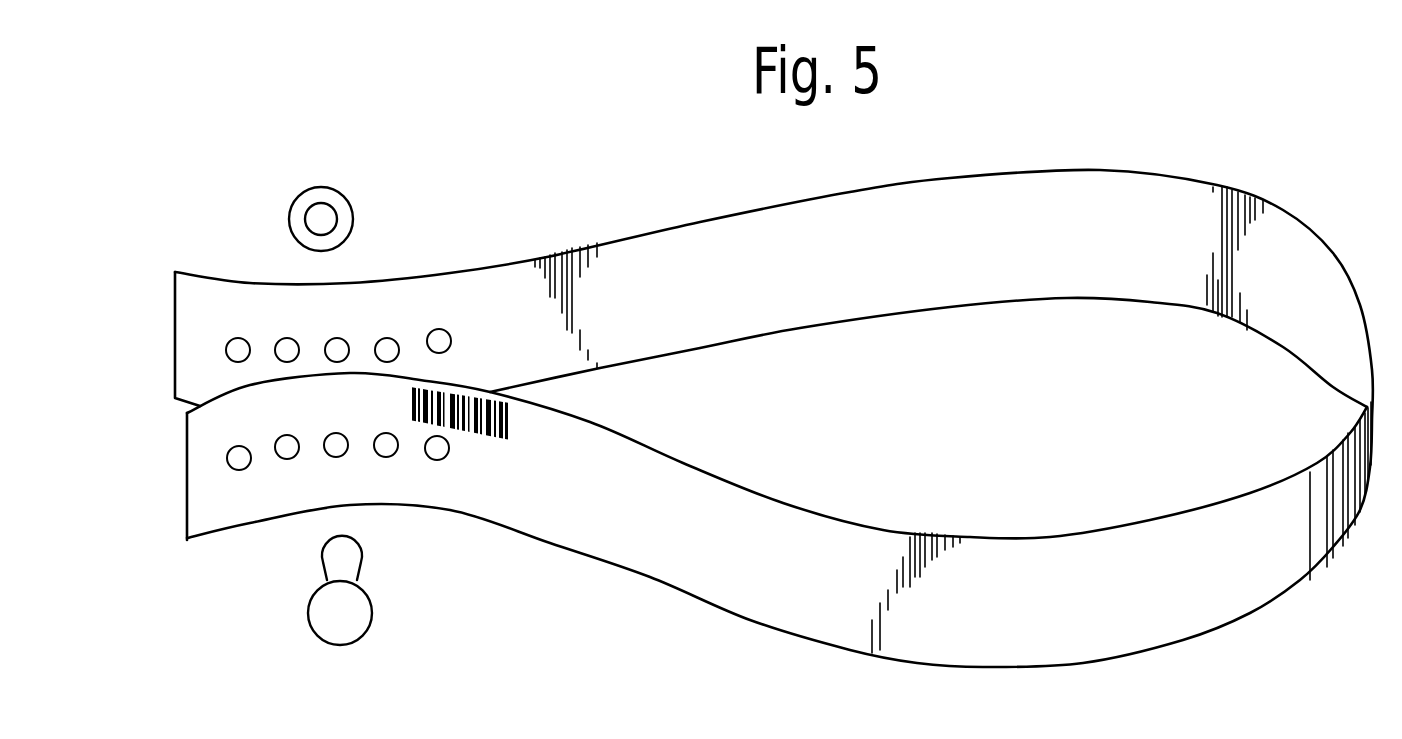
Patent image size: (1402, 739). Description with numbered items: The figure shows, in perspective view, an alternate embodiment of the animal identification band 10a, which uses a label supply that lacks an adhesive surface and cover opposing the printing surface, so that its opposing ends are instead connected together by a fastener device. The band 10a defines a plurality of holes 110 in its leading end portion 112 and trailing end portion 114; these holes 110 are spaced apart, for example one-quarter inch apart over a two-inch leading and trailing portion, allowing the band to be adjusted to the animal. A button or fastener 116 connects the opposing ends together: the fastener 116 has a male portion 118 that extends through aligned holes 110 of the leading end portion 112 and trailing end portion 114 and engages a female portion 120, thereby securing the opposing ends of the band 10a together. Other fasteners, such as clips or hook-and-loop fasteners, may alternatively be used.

The animal identification band 10a is at (1107, 185).
The holes 110 is at (242, 345).
The leading end portion 112 is at (237, 307).
The trailing end portion 114 is at (222, 458).
The fastener 116 is at (293, 609).
The male portion 118 is at (337, 612).
The female portion 120 is at (312, 195).